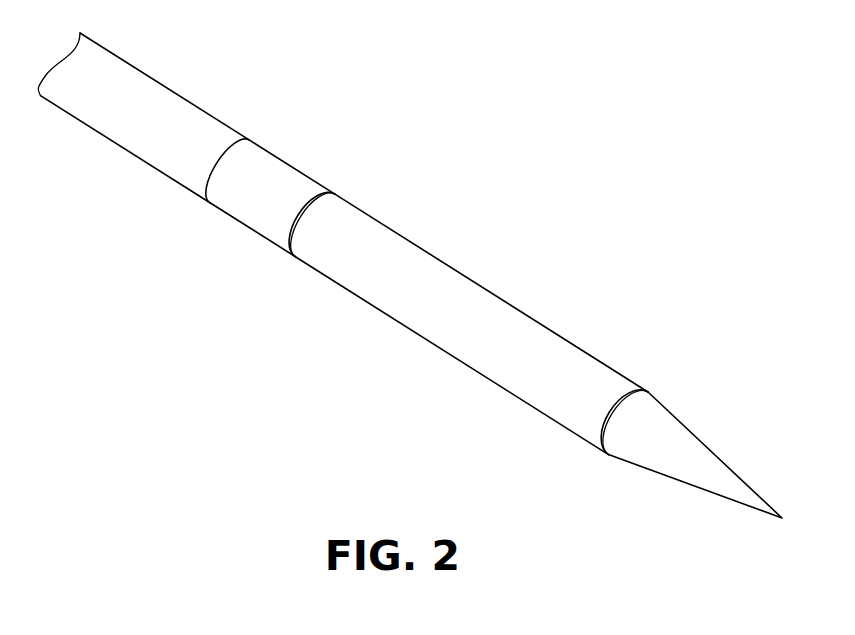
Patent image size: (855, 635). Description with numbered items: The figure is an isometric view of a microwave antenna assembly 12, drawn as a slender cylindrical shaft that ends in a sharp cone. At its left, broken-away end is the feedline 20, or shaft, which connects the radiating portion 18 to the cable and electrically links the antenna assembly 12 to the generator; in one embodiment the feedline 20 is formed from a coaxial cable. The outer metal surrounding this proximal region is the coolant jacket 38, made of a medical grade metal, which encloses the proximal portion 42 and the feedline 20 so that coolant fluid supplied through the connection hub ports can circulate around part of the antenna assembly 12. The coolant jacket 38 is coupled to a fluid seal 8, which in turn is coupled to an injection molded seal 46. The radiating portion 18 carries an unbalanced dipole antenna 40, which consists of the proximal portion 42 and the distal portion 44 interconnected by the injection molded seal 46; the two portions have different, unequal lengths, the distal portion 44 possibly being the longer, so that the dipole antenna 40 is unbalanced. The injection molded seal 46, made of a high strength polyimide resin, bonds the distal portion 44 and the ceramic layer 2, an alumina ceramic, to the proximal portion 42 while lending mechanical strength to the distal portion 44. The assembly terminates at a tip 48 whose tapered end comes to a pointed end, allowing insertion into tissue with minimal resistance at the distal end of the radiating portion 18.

The ceramic layer 2 is at (463, 283).
The fluid seal 8 is at (253, 218).
The antenna assembly 12 is at (410, 275).
The radiating portion 18 is at (430, 198).
The feedline 20 is at (170, 78).
The coolant jacket 38 is at (145, 144).
The dipole antenna 40 is at (432, 357).
The proximal portion 42 is at (351, 189).
The distal portion 44 is at (471, 324).
The injection molded seal 46 is at (290, 248).
The tip 48 is at (693, 442).